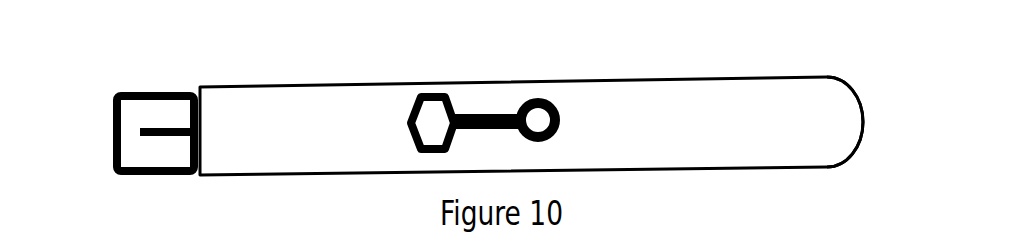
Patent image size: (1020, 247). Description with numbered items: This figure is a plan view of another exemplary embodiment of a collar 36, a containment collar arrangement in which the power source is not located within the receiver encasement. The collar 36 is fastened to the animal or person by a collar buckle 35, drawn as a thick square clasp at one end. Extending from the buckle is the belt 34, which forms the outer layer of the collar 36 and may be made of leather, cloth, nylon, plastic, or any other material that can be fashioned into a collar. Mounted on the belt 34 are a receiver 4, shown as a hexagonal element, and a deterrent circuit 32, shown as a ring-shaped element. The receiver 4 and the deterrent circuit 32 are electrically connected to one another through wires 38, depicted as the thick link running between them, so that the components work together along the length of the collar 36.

The belt 34 is at (215, 86).
The collar buckle 35 is at (115, 118).
The collar 36 is at (865, 122).
The receiver 4 is at (407, 123).
The wires 38 is at (483, 110).
The deterrent circuit 32 is at (562, 115).